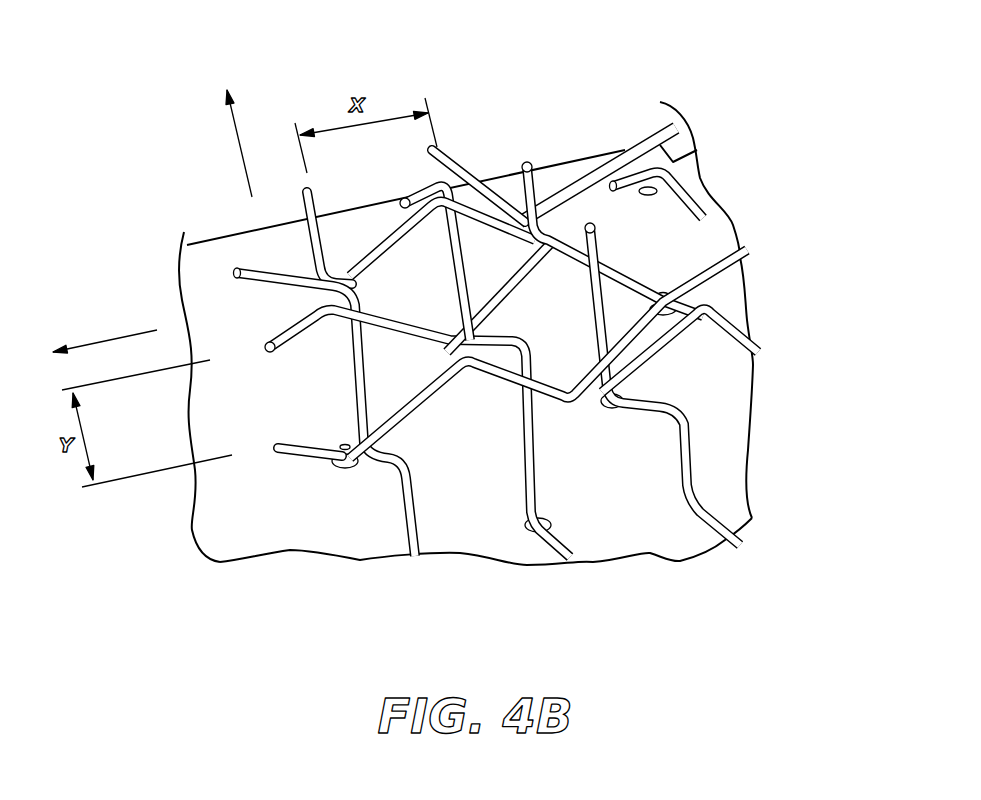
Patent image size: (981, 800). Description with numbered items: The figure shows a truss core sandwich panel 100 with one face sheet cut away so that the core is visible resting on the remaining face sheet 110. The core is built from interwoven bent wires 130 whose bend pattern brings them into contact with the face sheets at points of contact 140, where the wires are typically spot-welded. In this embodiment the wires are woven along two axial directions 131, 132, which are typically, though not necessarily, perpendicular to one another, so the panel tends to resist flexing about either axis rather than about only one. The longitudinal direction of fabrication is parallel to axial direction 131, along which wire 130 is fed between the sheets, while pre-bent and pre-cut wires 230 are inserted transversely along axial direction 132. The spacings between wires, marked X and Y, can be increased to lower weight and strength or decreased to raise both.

The sandwich panel 100 is at (728, 74).
The face sheet 110 is at (671, 540).
The wire 130 is at (718, 268).
The axial direction 131 is at (105, 341).
The axial direction 132 is at (243, 155).
The point of contact 140 is at (533, 527).
The pre-bent and pre-cut wire 230 is at (418, 553).